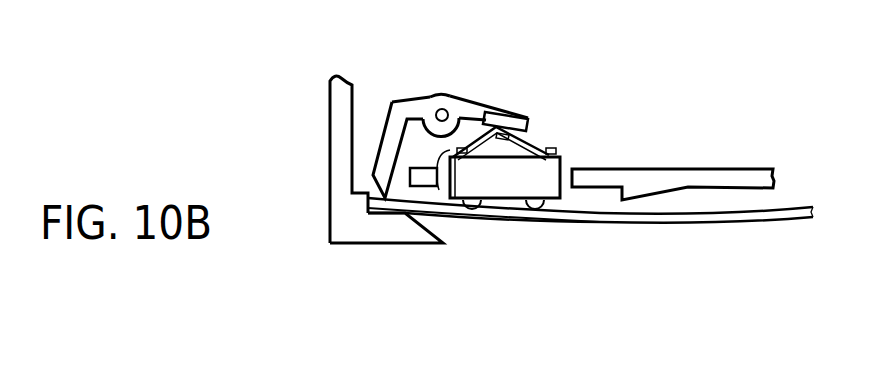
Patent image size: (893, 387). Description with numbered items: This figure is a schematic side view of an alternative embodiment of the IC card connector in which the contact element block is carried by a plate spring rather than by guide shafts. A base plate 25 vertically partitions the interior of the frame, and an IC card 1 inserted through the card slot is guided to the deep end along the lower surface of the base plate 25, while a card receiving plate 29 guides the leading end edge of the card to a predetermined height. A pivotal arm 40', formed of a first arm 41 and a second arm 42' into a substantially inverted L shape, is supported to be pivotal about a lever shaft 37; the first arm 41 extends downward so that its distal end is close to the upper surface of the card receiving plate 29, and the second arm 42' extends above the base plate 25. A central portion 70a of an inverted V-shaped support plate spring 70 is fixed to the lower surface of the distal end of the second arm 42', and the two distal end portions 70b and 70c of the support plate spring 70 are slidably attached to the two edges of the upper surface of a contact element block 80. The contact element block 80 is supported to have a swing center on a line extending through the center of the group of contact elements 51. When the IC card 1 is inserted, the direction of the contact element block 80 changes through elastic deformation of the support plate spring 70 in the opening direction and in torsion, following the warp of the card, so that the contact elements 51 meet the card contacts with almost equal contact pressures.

The IC card 1 is at (567, 225).
The base plate 25 is at (717, 180).
The card receiving plate 29 is at (364, 236).
The lever shaft 37 is at (438, 108).
The pivotal arm 40' is at (489, 90).
The first arm 41 is at (387, 150).
The second arm 42' is at (533, 111).
The contact elements 51 is at (480, 212).
The support plate spring 70 is at (540, 145).
The central portion 70a is at (503, 106).
The distal end portion 70b is at (439, 190).
The distal end portion 70c is at (562, 156).
The contact element block 80 is at (562, 185).